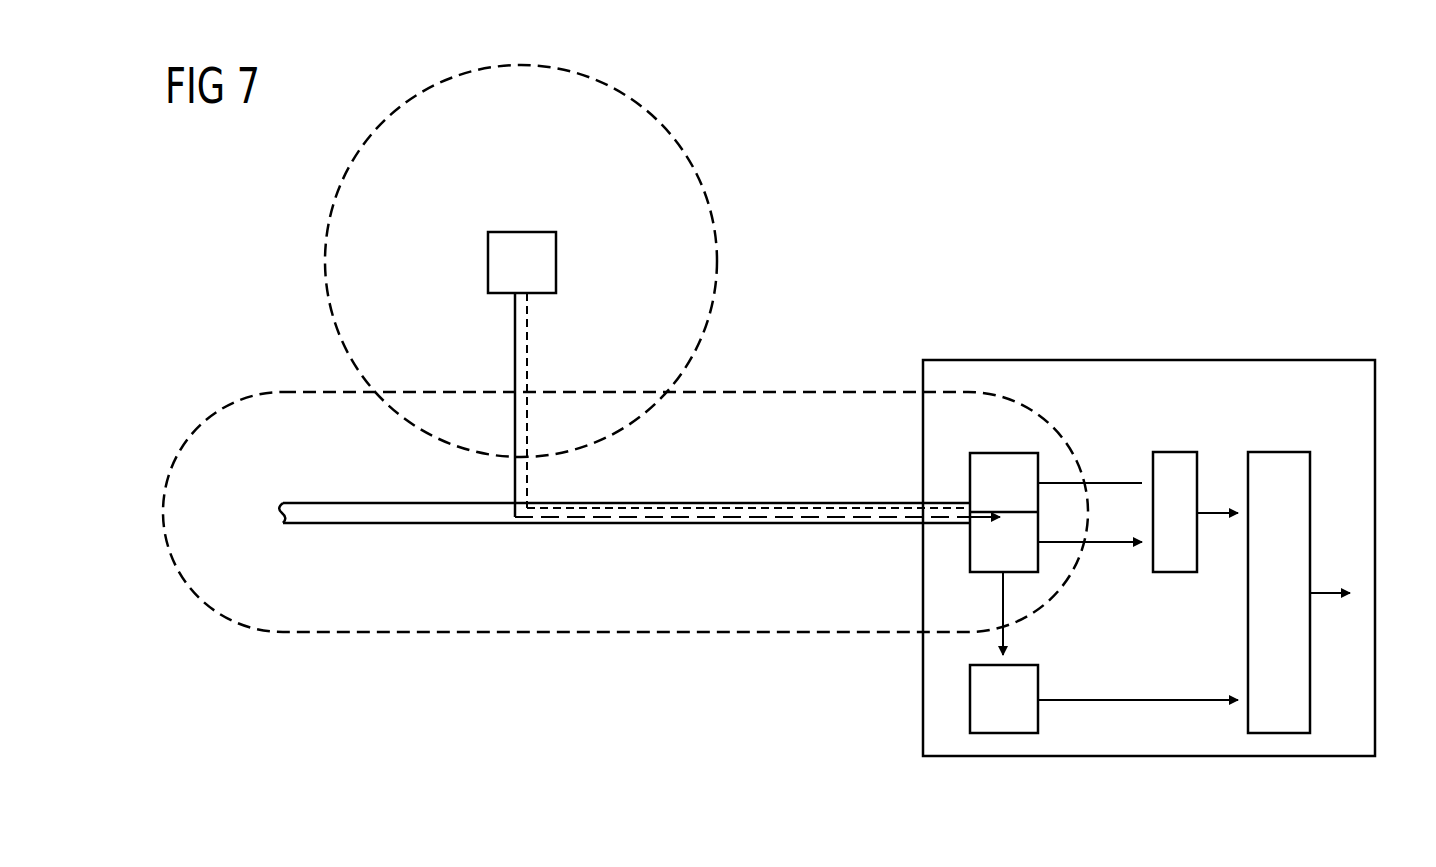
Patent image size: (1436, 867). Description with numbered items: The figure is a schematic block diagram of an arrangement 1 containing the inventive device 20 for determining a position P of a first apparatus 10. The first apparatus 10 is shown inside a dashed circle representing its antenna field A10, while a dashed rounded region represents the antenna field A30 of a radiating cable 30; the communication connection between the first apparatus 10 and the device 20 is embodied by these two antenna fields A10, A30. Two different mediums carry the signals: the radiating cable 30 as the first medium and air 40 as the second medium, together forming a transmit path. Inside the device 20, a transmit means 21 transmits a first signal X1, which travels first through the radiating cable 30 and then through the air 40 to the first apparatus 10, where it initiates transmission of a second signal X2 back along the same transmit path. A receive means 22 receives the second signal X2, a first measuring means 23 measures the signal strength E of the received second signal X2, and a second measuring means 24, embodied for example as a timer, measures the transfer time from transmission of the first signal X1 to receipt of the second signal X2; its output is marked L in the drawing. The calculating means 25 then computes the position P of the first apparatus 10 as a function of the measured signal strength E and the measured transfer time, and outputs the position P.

The arrangement 1 is at (972, 240).
The first apparatus 10 is at (520, 232).
The device 20 is at (1140, 360).
The transmit means 21 is at (1020, 453).
The receive means 22 is at (1020, 573).
The first measuring means 23 is at (1038, 715).
The second measuring means 24 is at (1175, 452).
The calculating means 25 is at (1280, 452).
The radiating cable 30 is at (755, 502).
The air 40 is at (712, 166).
The antenna field of the first apparatus A10 is at (718, 246).
The antenna field of the radiating cable A30 is at (820, 392).
The first signal X1 is at (528, 478).
The second signal X2 is at (515, 477).
The comparison result signal L is at (1210, 512).
The signal strength E is at (1175, 699).
The position P is at (1325, 592).